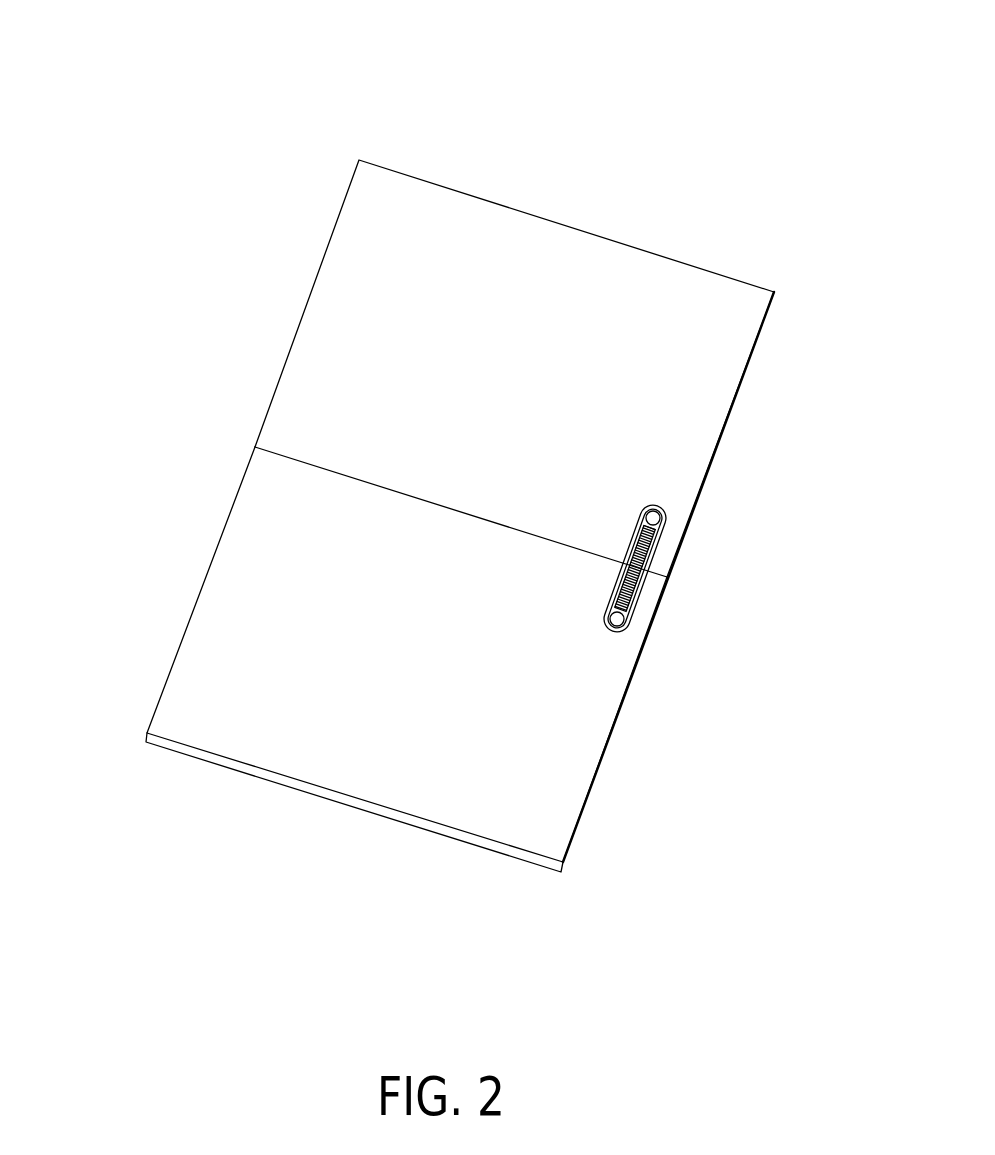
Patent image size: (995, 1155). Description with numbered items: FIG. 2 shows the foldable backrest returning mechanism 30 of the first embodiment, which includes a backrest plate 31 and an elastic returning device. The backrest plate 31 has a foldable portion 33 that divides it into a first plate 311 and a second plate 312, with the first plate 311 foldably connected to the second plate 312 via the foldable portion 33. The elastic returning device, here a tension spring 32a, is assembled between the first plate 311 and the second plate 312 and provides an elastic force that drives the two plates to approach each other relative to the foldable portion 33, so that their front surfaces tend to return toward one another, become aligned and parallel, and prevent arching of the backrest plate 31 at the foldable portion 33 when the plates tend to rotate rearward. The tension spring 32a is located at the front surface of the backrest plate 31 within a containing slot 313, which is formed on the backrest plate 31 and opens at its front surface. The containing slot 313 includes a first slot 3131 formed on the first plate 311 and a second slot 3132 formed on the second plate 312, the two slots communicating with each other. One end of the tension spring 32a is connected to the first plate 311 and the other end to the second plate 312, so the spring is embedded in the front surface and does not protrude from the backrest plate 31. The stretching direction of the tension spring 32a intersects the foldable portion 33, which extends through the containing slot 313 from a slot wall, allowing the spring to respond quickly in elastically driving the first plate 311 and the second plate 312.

The foldable backrest returning mechanism 30 is at (58, 47).
The backrest plate 31 is at (97, 353).
The first plate 311 is at (290, 508).
The second plate 312 is at (318, 432).
The containing slot 313 is at (822, 510).
The first slot 3131 is at (641, 628).
The second slot 3132 is at (680, 509).
The tension spring 32a is at (630, 550).
The foldable portion 33 is at (468, 526).